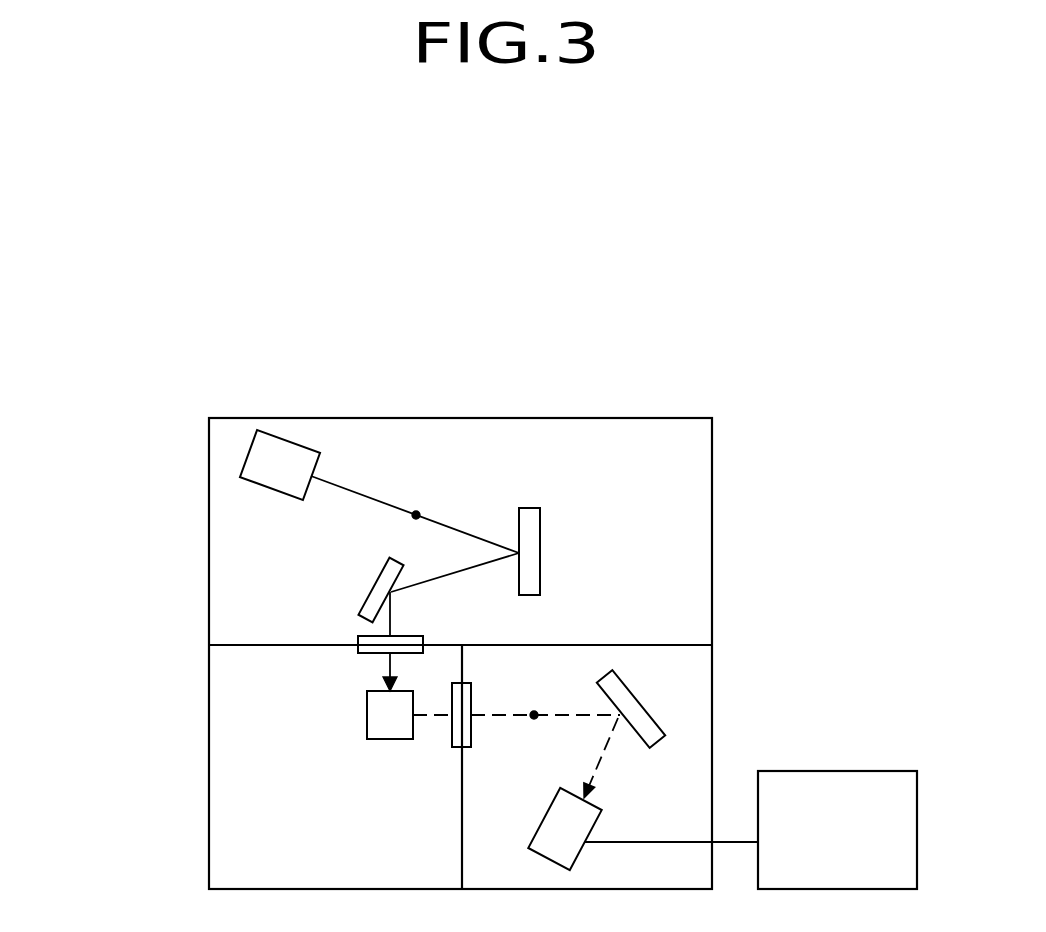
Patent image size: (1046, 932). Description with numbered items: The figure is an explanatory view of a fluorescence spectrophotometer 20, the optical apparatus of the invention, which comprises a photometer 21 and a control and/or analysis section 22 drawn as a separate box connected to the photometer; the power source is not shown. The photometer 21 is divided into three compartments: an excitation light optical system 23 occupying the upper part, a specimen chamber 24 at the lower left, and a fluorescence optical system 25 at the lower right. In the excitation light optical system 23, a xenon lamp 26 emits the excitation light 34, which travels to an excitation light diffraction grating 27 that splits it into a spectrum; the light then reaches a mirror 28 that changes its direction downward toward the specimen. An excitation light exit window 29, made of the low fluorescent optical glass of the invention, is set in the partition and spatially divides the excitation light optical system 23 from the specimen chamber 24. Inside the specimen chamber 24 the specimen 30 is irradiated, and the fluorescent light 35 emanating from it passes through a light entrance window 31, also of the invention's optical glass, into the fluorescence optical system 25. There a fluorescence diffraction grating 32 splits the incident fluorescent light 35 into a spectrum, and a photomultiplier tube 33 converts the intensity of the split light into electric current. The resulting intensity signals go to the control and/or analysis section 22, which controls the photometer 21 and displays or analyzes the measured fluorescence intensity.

The fluorescence spectrophotometer 20 is at (151, 423).
The photometer 21 is at (208, 513).
The control and/or analysis section 22 is at (863, 771).
The excitation light optical system 23 is at (603, 456).
The specimen chamber 24 is at (245, 838).
The fluorescence optical system 25 is at (687, 703).
The xenon lamp 26 is at (253, 432).
The excitation light diffraction grating 27 is at (537, 550).
The mirror 28 is at (380, 573).
The excitation light exit window 29 is at (358, 638).
The specimen 30 is at (367, 718).
The light entrance window 31 is at (452, 737).
The fluorescence diffraction grating 32 is at (627, 695).
The photomultiplier tube 33 is at (542, 838).
The excitation light 34 is at (417, 512).
The fluorescent light 35 is at (534, 722).